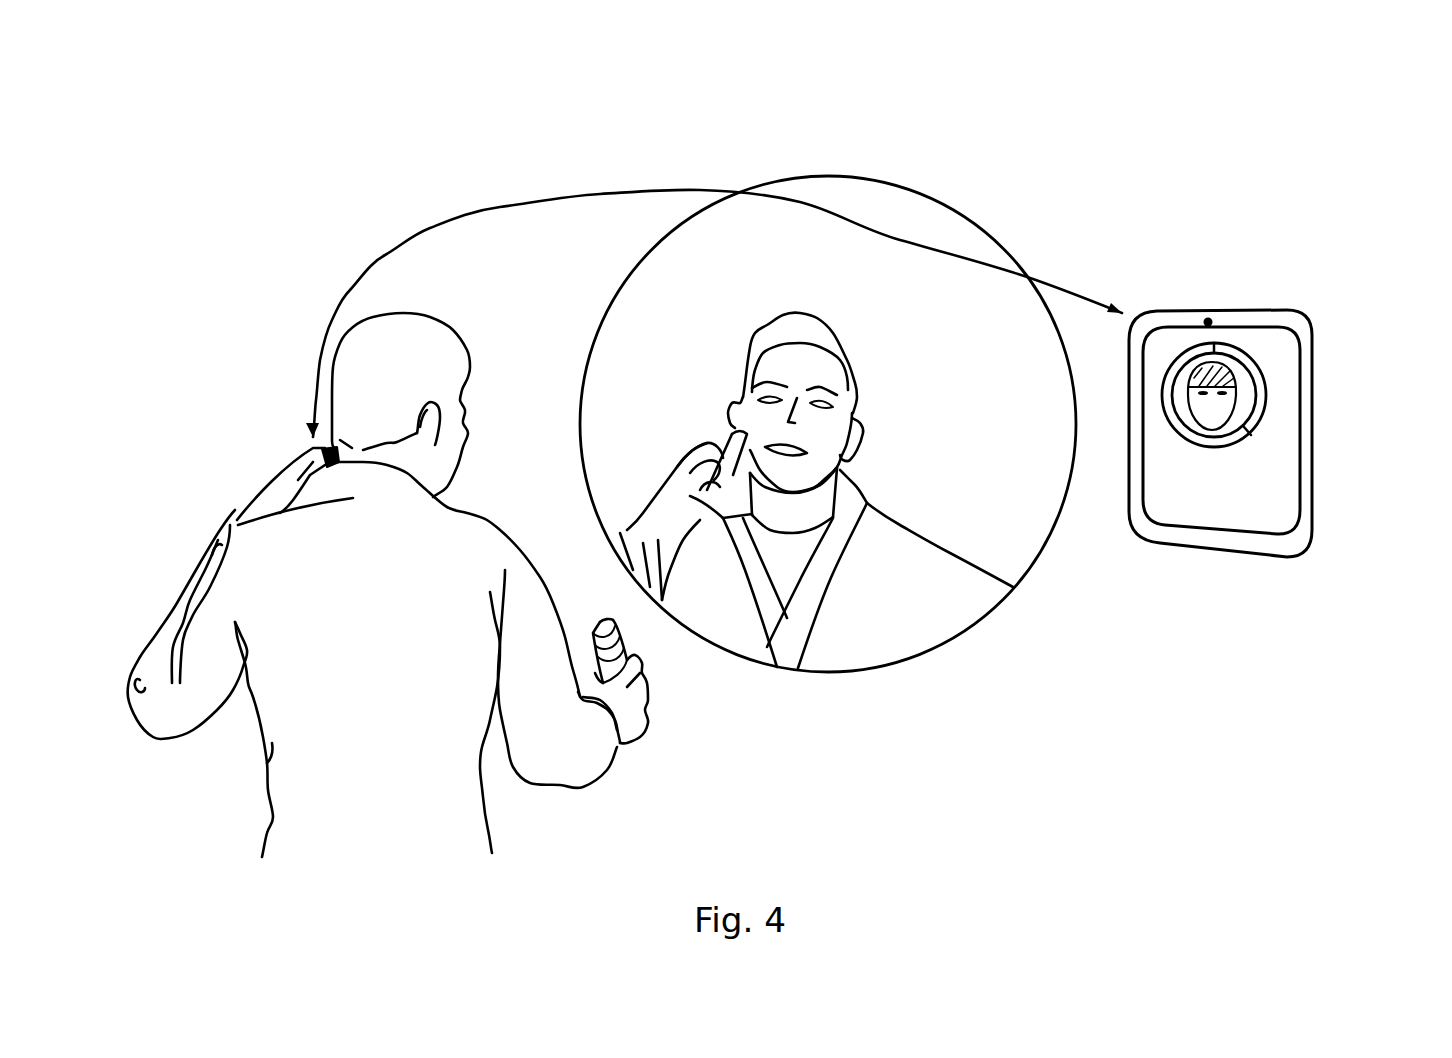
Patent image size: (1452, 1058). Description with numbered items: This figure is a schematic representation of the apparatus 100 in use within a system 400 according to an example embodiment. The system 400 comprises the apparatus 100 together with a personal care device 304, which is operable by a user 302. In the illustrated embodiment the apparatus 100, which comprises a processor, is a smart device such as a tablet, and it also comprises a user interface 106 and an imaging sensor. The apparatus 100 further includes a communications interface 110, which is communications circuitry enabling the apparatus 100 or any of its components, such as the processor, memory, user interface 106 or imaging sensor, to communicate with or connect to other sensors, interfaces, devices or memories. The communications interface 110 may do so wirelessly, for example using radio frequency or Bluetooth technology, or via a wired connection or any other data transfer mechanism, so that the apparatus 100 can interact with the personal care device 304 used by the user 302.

The system 400 is at (997, 155).
The apparatus 100 is at (1312, 517).
The user interface 106 is at (1257, 343).
The communications interface 110 is at (1208, 318).
The user 302 is at (290, 611).
The personal care device 304 is at (333, 450).